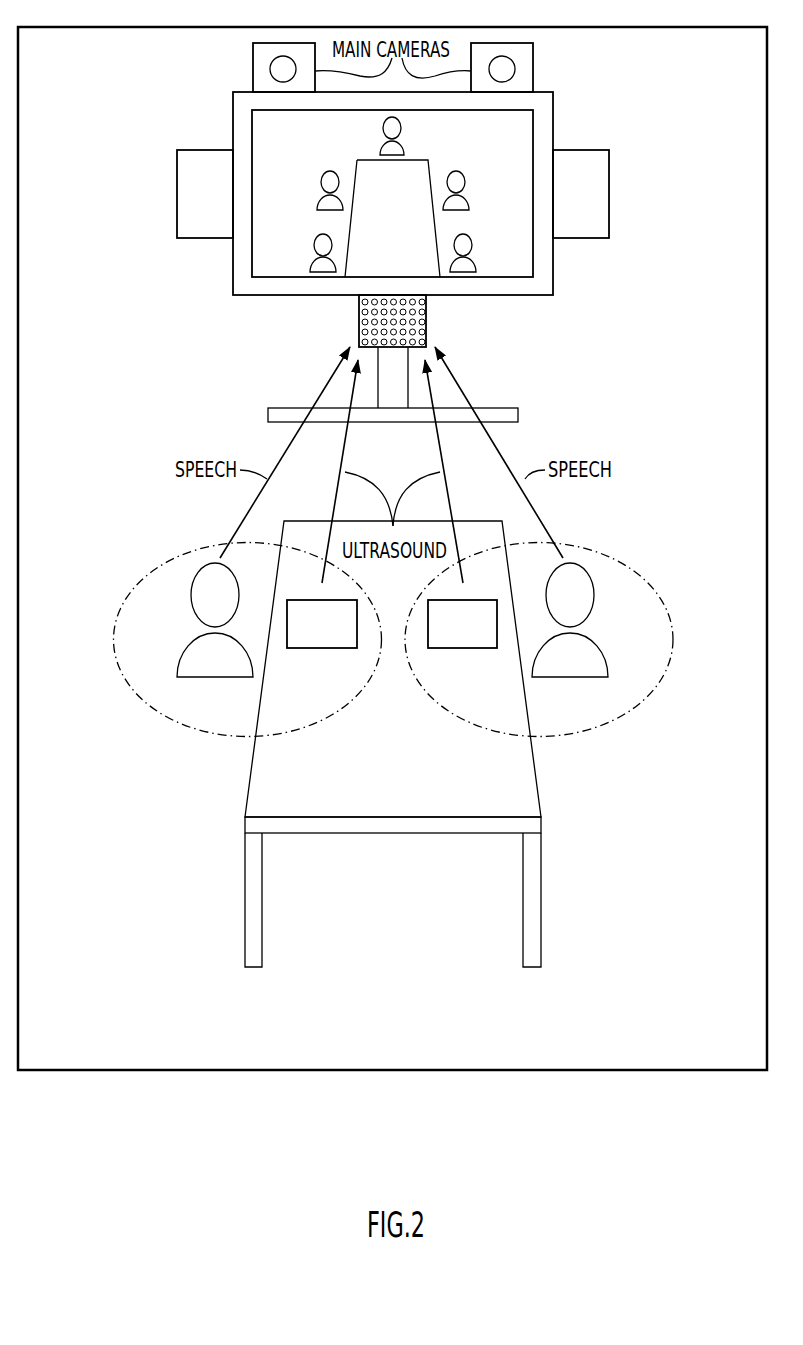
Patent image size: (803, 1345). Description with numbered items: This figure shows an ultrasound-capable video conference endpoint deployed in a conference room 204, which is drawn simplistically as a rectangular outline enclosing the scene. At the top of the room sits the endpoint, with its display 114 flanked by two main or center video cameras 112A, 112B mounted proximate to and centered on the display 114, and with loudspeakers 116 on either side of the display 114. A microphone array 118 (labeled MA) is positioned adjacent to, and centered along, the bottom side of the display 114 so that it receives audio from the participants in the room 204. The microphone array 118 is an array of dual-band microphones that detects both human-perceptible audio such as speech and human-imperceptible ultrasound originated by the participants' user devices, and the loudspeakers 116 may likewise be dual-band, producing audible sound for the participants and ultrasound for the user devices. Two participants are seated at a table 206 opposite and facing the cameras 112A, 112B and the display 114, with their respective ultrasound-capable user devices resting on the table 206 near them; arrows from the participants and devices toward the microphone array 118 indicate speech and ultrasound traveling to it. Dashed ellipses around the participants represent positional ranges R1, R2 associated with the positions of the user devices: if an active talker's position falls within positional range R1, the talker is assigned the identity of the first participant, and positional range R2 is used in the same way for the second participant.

The main video camera 112A is at (253, 70).
The main video camera 112B is at (533, 70).
The display 114 is at (512, 143).
The loudspeaker 116 is at (177, 193).
The microphone array 118 is at (427, 308).
The conference room 204 is at (682, 75).
The table 206 is at (404, 778).
The positional range R1 is at (155, 712).
The positional range R2 is at (633, 710).